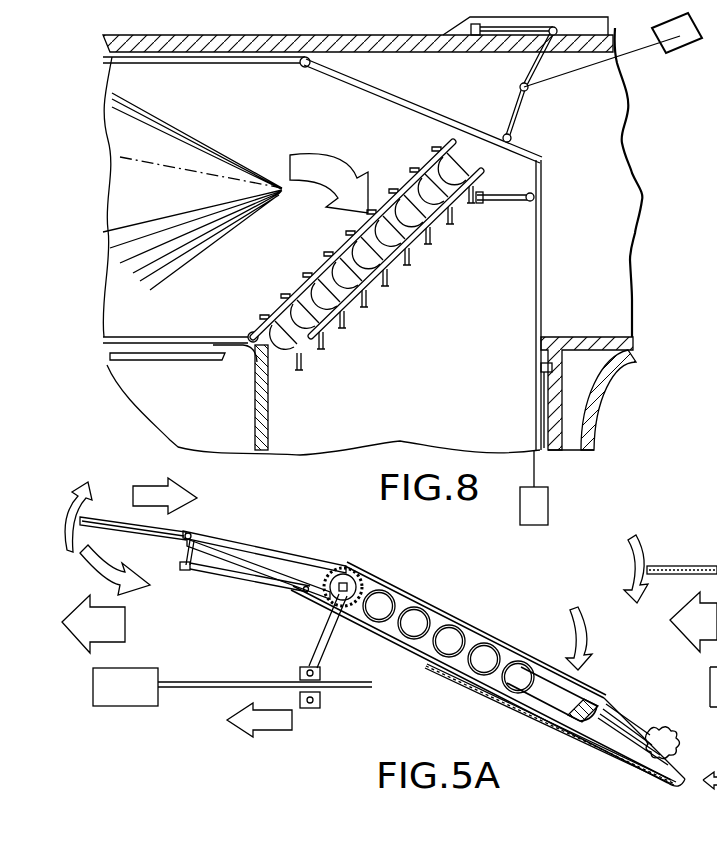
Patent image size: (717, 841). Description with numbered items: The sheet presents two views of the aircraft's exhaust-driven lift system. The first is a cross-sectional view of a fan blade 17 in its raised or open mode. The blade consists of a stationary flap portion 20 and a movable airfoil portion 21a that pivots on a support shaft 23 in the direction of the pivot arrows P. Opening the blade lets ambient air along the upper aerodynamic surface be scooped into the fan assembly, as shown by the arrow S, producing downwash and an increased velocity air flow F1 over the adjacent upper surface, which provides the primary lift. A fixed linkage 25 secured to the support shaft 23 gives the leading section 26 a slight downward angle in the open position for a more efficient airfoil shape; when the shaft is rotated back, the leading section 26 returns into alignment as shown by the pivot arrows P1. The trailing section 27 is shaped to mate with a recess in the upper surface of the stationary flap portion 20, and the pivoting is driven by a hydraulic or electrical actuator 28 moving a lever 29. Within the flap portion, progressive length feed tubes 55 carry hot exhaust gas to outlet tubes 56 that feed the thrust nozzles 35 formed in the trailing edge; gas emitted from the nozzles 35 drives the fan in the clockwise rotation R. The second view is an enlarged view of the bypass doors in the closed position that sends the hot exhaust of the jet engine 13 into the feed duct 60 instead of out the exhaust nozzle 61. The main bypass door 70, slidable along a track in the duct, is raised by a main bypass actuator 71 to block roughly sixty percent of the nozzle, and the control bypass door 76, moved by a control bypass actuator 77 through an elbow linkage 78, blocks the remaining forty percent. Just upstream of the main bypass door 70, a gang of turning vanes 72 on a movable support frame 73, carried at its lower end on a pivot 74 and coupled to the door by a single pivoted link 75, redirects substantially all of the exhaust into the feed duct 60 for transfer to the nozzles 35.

In FIG. 8, the jet engine 13 is at (367, 33).
In FIG. 8, the feed duct 60 is at (320, 447).
In FIG. 8, the exhaust nozzle 61 is at (634, 246).
In FIG. 8, the main bypass door 70 is at (543, 238).
In FIG. 8, the main bypass actuator 71 is at (533, 520).
In FIG. 8, the turning vanes 72 is at (310, 282).
In FIG. 8, the movable support frame 73 is at (367, 256).
In FIG. 8, the pivot 74 is at (250, 332).
In FIG. 8, the pivoted link 75 is at (507, 202).
In FIG. 8, the control bypass door 76 is at (450, 124).
In FIG. 8, the control bypass actuator 77 is at (683, 34).
In FIG. 8, the elbow linkage 78 is at (523, 109).
In FIG. 5A, the fan blade 17 is at (293, 529).
In FIG. 5A, the stationary flap portion 20 is at (488, 674).
In FIG. 5A, the movable airfoil portion 21a is at (251, 493).
In FIG. 5A, the support shaft 23 is at (352, 567).
In FIG. 5A, the fixed linkage 25 is at (226, 578).
In FIG. 5A, the leading section 26 is at (117, 518).
In FIG. 5A, the trailing section 27 is at (530, 662).
In FIG. 5A, the actuator 28 is at (143, 682).
In FIG. 5A, the lever 29 is at (317, 652).
In FIG. 5A, the thrust nozzles 35 is at (613, 710).
In FIG. 5A, the feed tubes 55 is at (410, 632).
In FIG. 5A, the outlet tubes 56 is at (545, 706).
In FIG. 5A, the increased velocity air flow F1 is at (157, 481).
In FIG. 5A, the rotation arrow R is at (117, 624).
In FIG. 5A, the scooping arrow S is at (98, 569).
In FIG. 5A, the pivot arrows P is at (606, 626).
In FIG. 5A, the pivot arrows P1 is at (632, 561).